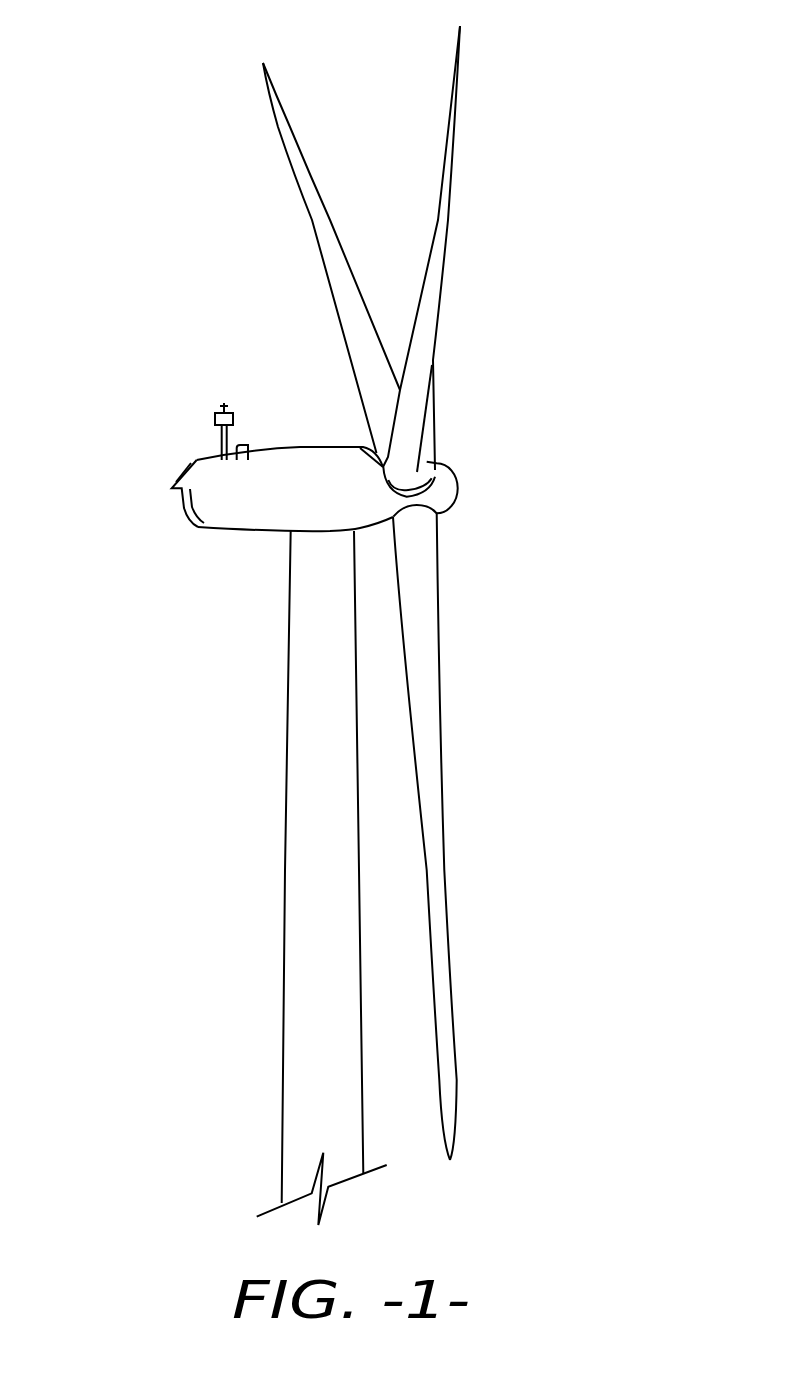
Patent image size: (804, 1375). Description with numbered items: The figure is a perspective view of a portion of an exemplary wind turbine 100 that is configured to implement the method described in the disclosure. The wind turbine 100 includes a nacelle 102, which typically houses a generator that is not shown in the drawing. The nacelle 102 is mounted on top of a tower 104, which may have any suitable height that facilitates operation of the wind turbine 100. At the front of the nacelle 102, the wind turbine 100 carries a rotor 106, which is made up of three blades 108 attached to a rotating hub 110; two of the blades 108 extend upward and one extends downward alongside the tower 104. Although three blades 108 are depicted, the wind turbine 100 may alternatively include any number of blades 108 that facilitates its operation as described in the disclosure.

The wind turbine 100 is at (142, 198).
The nacelle 102 is at (243, 533).
The tower 104 is at (283, 947).
The rotor 106 is at (577, 353).
The blades 108 is at (337, 220).
The rotating hub 110 is at (457, 483).